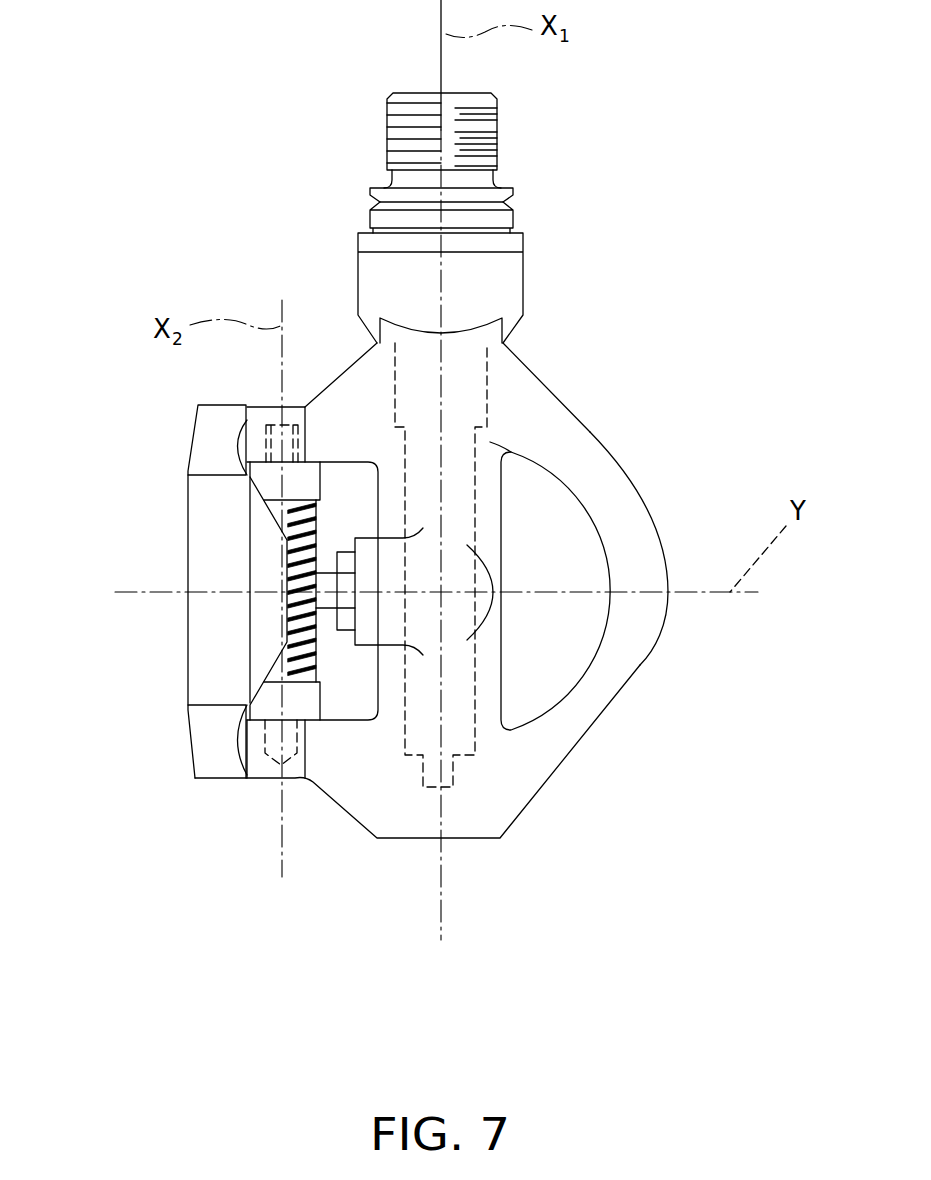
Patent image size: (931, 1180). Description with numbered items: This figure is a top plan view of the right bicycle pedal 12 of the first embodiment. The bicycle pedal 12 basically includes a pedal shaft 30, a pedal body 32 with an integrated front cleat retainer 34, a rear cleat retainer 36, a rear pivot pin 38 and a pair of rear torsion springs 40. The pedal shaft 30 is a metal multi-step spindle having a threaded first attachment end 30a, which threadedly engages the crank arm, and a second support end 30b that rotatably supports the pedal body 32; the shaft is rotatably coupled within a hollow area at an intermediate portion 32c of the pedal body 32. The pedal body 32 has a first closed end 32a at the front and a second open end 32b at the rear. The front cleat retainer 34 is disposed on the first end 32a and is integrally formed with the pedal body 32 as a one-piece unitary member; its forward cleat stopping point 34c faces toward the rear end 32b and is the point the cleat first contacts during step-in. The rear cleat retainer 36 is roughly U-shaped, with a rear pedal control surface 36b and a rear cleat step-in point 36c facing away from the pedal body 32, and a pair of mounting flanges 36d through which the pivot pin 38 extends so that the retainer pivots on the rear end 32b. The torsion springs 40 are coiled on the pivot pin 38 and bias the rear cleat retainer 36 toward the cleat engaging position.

The bicycle pedal 12 is at (693, 209).
The pedal shaft 30 is at (522, 195).
The first attachment end 30a is at (497, 125).
The second support end 30b is at (480, 742).
The pedal body 32 is at (571, 407).
The first closed end 32a is at (643, 537).
The second open end 32b is at (262, 768).
The intermediate portion 32c is at (490, 495).
The front cleat retainer 34 is at (600, 558).
The forward cleat stopping point 34c is at (610, 592).
The rear cleat retainer 36 is at (180, 514).
The rear pedal control surface 36b is at (290, 572).
The rear cleat step-in point 36c is at (246, 588).
The mounting flanges 36d is at (320, 480).
The rear pivot pin 38 is at (270, 448).
The rear torsion springs 40 is at (318, 532).